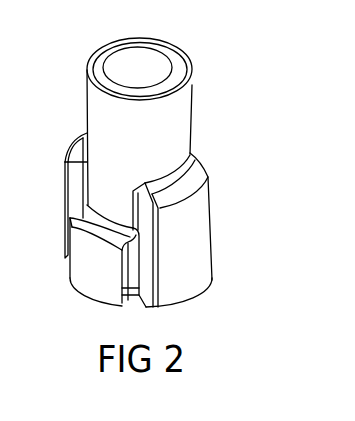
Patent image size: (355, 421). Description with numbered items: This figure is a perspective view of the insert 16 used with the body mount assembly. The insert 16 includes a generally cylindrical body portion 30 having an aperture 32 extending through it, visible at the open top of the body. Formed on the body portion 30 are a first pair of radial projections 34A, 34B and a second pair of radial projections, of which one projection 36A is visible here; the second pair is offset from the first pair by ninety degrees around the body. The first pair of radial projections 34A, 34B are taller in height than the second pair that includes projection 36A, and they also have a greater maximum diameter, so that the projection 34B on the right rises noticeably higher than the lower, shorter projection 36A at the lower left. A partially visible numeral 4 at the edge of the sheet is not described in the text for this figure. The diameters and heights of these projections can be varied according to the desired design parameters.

The insert 16 is at (197, 83).
The cylindrical body portion 30 is at (95, 125).
The aperture 32 is at (137, 67).
The first radial projection 34A is at (65, 200).
The first radial projection 34B is at (183, 272).
The second radial projection 36A is at (95, 282).
The partial numeral 4 is at (4, 201).